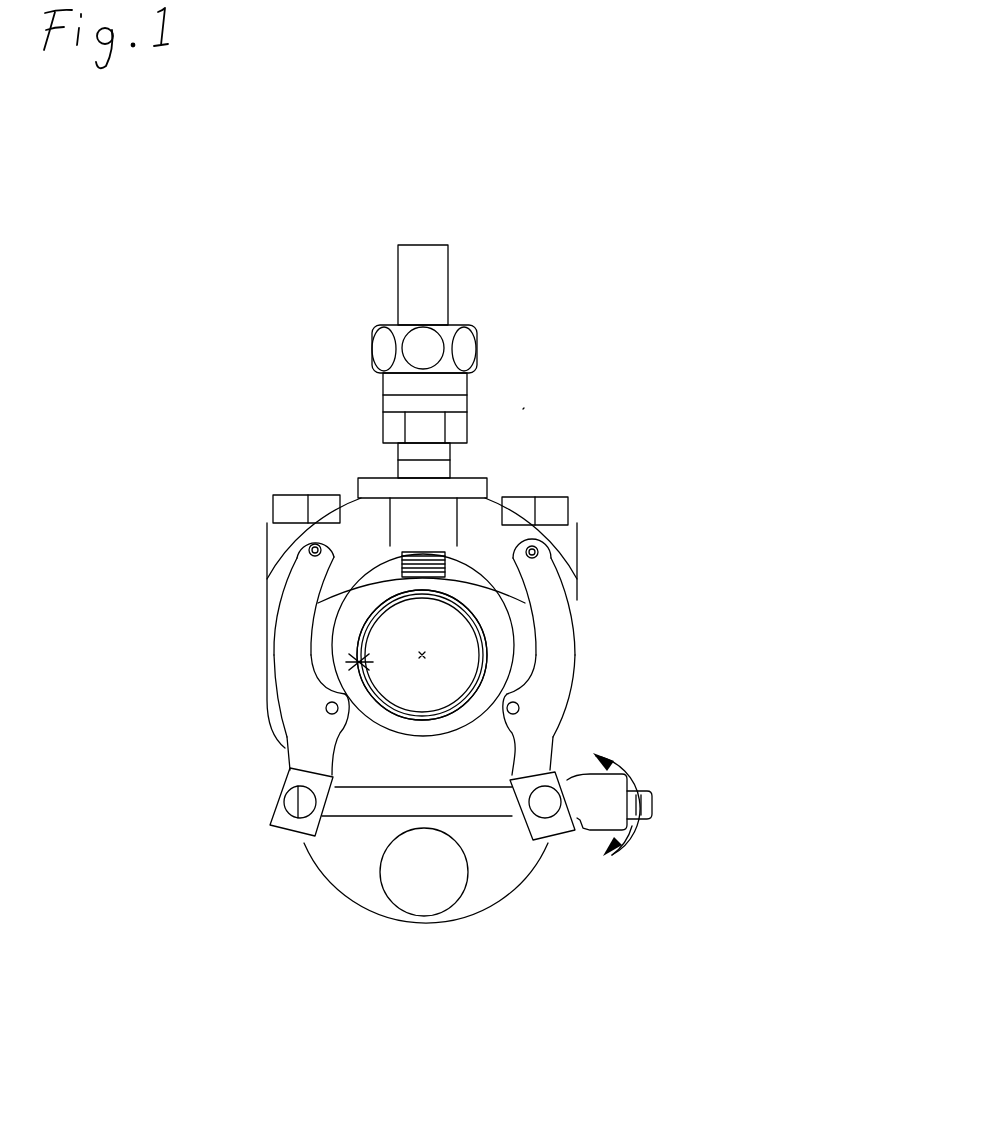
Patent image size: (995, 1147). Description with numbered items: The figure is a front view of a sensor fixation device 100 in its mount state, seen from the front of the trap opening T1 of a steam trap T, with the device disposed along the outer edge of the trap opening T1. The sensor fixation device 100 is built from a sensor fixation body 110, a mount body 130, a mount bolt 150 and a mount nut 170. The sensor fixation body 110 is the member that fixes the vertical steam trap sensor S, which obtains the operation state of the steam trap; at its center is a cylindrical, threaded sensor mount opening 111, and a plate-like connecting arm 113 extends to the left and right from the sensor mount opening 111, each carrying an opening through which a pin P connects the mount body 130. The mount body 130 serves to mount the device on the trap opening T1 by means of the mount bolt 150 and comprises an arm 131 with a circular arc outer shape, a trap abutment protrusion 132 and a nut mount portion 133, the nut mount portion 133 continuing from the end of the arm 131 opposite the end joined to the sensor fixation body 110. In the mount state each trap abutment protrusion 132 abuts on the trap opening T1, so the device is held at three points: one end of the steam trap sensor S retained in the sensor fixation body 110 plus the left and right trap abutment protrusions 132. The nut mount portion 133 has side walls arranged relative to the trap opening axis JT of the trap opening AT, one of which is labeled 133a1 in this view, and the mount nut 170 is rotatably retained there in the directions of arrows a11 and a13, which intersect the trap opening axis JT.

The sensor fixation device 100 is at (527, 406).
The sensor fixation body 110 is at (480, 520).
The sensor mount opening 111 is at (422, 530).
The connecting arm 113 is at (350, 532).
The mount body 130 is at (295, 735).
The arm 131 is at (578, 590).
The trap abutment protrusion 132 is at (556, 648).
The nut mount portion 133 is at (556, 720).
The bracket portion 133a1 is at (552, 760).
The mount bolt 150 is at (480, 810).
The mount nut 170 is at (583, 820).
The steam trap sensor S is at (385, 428).
The pin P is at (297, 543).
The trap opening T1 is at (372, 606).
The trap opening axis JT is at (422, 655).
The trap opening AT is at (348, 663).
The steam trap T is at (323, 864).
The arrow a11 is at (612, 760).
The arrow a13 is at (637, 838).